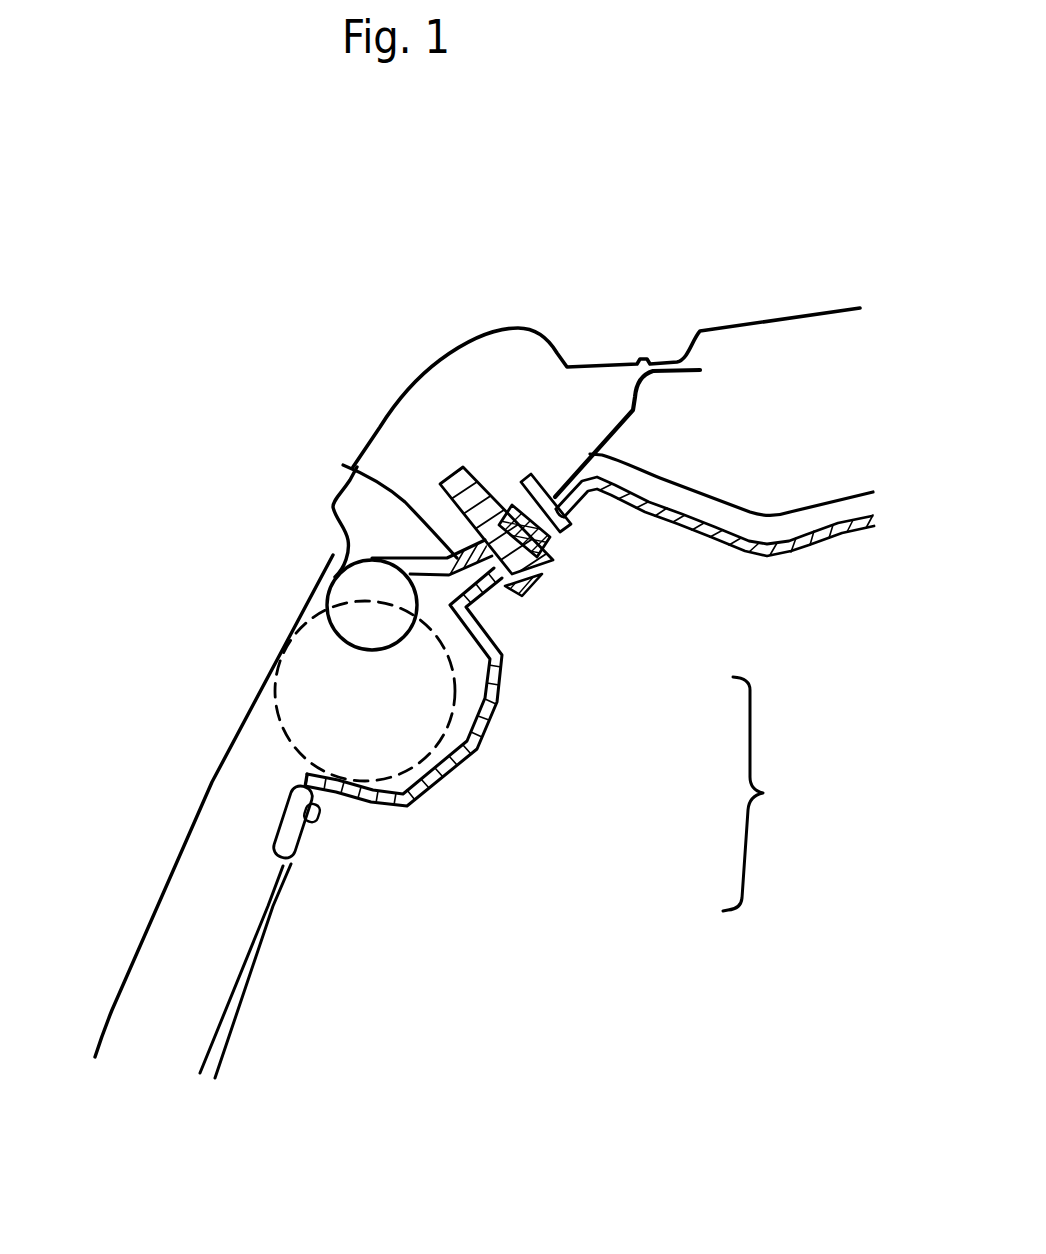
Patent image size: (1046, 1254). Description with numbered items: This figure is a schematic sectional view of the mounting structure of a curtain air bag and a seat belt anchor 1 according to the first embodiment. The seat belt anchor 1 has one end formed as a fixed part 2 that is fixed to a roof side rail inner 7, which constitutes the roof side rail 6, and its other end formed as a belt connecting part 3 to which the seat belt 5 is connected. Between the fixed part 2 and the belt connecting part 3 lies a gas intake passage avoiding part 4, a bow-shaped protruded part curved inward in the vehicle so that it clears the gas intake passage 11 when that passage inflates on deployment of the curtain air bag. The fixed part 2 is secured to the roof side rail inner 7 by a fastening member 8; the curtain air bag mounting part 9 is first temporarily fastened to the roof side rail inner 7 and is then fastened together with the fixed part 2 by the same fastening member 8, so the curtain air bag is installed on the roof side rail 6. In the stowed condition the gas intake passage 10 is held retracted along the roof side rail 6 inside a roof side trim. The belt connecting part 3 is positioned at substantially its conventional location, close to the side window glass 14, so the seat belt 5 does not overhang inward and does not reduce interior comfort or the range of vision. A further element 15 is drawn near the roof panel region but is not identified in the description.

The seat belt anchor 1 is at (763, 794).
The fixed part 2 is at (507, 600).
The belt connecting part 3 is at (314, 821).
The gas intake passage avoiding part 4 is at (492, 759).
The seat belt 5 is at (240, 1003).
The roof side rail 6 is at (414, 303).
The roof side rail inner 7 is at (605, 432).
The fastening member 8 is at (527, 573).
The curtain air bag mounting part 9 is at (343, 465).
The gas intake passage 10 is at (337, 633).
The gas intake passage 11 is at (278, 719).
The side window glass 14 is at (160, 885).
The roof panel 15 is at (820, 537).